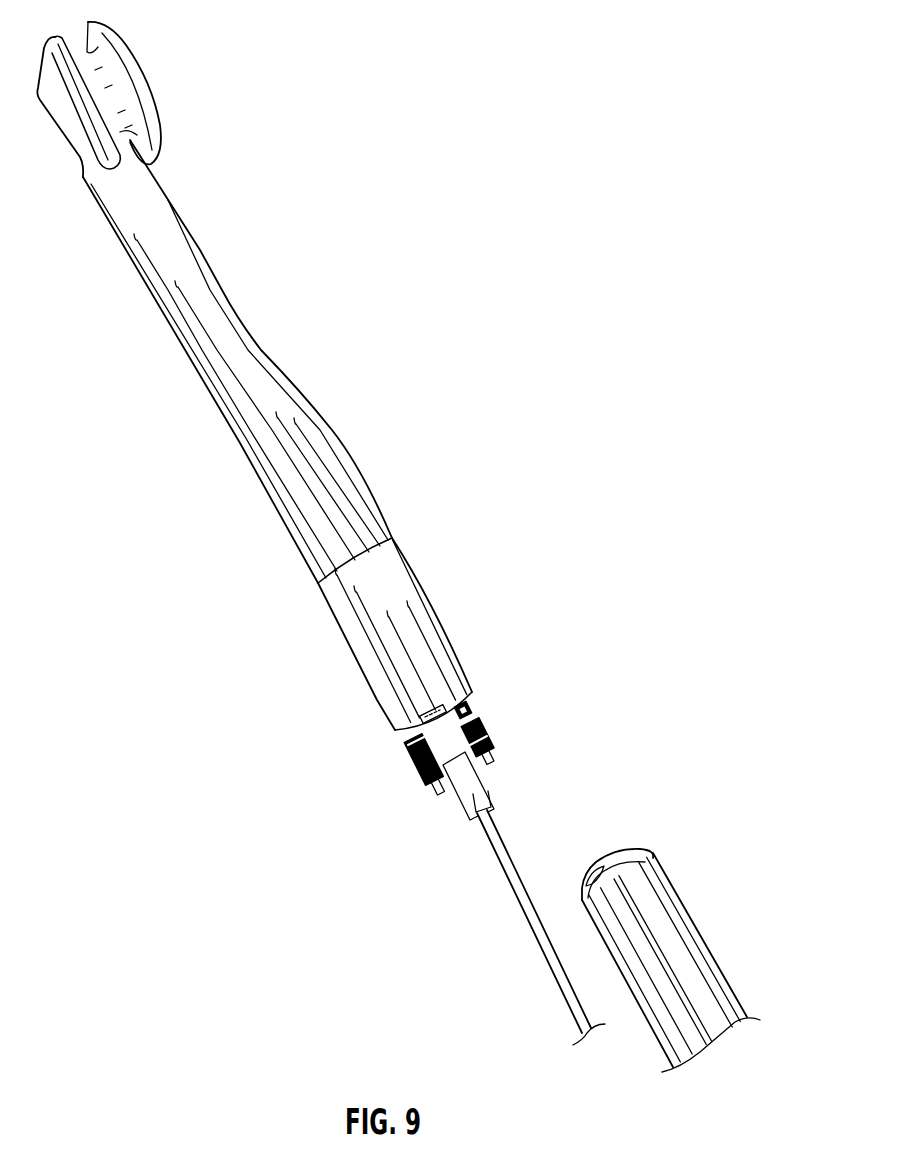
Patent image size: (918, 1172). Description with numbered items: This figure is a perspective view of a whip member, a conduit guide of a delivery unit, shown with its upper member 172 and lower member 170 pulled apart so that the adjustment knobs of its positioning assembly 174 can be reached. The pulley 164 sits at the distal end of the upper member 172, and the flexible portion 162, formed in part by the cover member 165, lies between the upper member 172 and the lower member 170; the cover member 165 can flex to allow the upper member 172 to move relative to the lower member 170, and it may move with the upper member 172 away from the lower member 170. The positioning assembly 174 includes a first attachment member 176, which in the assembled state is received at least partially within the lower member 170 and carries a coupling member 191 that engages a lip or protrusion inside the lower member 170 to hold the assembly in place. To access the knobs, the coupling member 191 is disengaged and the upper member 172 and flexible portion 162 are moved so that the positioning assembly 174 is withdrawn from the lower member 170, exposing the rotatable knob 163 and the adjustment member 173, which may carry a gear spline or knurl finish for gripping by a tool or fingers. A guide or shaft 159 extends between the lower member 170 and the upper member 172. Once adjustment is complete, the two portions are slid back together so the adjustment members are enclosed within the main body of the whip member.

The pulley 164 is at (148, 100).
The upper member 172 is at (250, 443).
The flexible portion 162 is at (351, 634).
The cover member 165 is at (360, 640).
The positioning assembly 174 is at (480, 652).
The first attachment member 176 is at (442, 727).
The adjustment member 173 is at (463, 721).
The rotatable knob 163 is at (420, 753).
The coupling member 191 is at (468, 808).
The shaft 159 is at (515, 895).
The lower member 170 is at (673, 902).